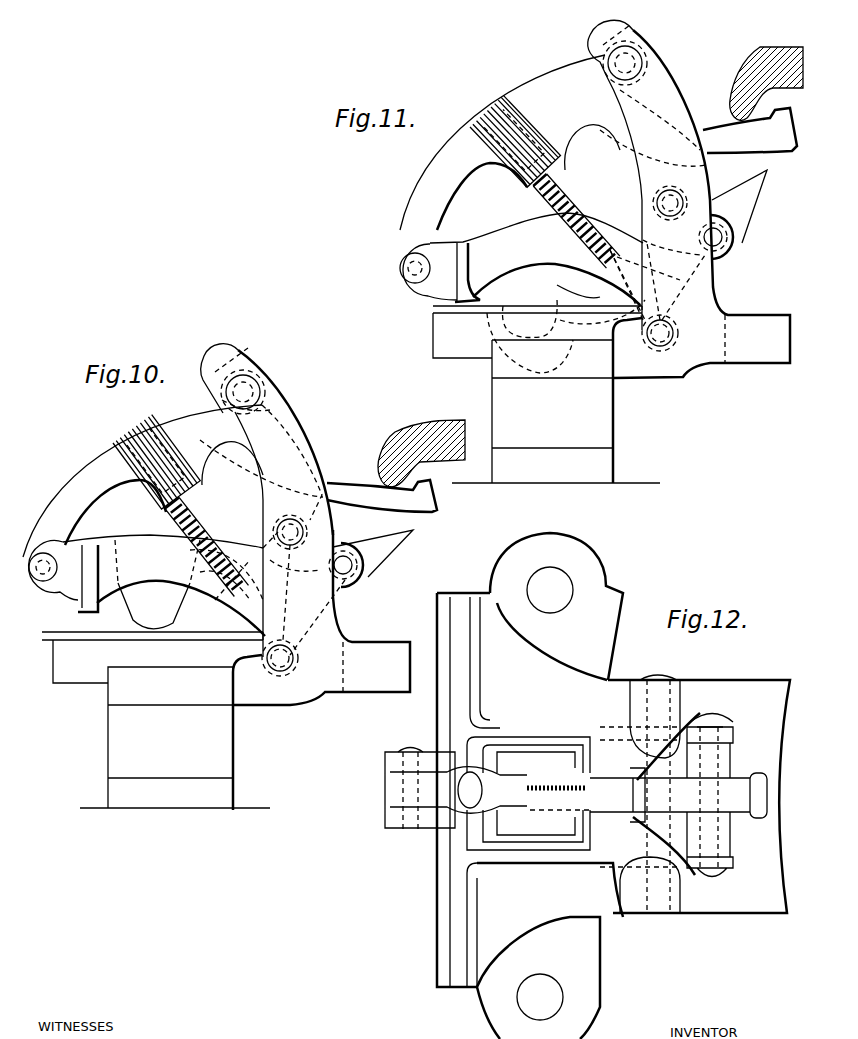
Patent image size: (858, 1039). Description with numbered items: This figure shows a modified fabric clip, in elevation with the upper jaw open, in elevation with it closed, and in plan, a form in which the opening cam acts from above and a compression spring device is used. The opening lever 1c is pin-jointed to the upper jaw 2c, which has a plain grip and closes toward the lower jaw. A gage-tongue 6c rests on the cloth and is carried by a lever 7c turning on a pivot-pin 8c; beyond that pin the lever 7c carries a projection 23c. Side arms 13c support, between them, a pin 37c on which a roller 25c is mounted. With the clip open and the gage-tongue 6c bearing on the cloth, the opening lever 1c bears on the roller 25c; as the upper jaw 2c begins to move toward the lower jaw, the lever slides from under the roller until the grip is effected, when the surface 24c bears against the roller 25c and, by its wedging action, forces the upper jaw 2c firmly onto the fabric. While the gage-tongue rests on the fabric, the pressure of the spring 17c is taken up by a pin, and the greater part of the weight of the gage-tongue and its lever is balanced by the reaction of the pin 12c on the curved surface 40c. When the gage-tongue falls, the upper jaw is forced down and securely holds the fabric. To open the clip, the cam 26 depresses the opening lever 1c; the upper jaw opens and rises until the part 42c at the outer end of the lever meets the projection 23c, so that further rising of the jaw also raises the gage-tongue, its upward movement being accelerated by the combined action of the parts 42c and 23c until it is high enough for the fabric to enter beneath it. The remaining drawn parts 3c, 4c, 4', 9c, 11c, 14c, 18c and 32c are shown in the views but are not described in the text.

In FIG. 10, the opening lever 1c is at (143, 481).
In FIG. 11, the opening lever 1c is at (510, 142).
In FIG. 12, the opening lever 1c is at (576, 790).
In FIG. 10, the upper jaw 2c is at (90, 596).
In FIG. 11, the upper jaw 2c is at (460, 283).
In FIG. 12, the upper jaw 2c is at (458, 697).
In FIG. 10, the arm 3c is at (164, 585).
In FIG. 11, the arm 3c is at (536, 259).
In FIG. 12, the arm 3c is at (520, 732).
In FIG. 10, the pivot 4c is at (53, 581).
In FIG. 11, the pivot 4c is at (400, 274).
In FIG. 12, the bolt 4' is at (410, 779).
In FIG. 10, the gage-tongue 6c is at (157, 584).
In FIG. 11, the gage-tongue 6c is at (548, 370).
In FIG. 12, the gage-tongue 6c is at (540, 750).
In FIG. 10, the lever of the gage-tongue 7c is at (222, 597).
In FIG. 11, the lever of the gage-tongue 7c is at (568, 287).
In FIG. 10, the pivot-pin 8c is at (353, 567).
In FIG. 11, the pivot-pin 8c is at (718, 238).
In FIG. 12, the pivot-pin 8c is at (715, 716).
In FIG. 10, the pivot pin 9c is at (270, 692).
In FIG. 11, the pivot pin 9c is at (660, 355).
In FIG. 12, the pivot pin 9c is at (660, 676).
In FIG. 10, the link 11c is at (326, 537).
In FIG. 11, the link 11c is at (657, 281).
In FIG. 10, the pin 12c is at (276, 534).
In FIG. 11, the pin 12c is at (655, 205).
In FIG. 10, the side arms 13c is at (300, 442).
In FIG. 11, the side arms 13c is at (649, 165).
In FIG. 12, the side arms 13c is at (640, 796).
In FIG. 10, the base block 14c is at (321, 670).
In FIG. 11, the base block 14c is at (621, 341).
In FIG. 12, the base block 14c is at (699, 796).
In FIG. 10, the spring 17c is at (213, 520).
In FIG. 11, the spring 17c is at (578, 192).
In FIG. 12, the spring 17c is at (552, 786).
In FIG. 10, the lever 18c is at (240, 627).
In FIG. 11, the lever 18c is at (610, 350).
In FIG. 10, the projection 23c is at (373, 553).
In FIG. 11, the projection 23c is at (739, 206).
In FIG. 10, the surface 24c is at (295, 432).
In FIG. 11, the surface 24c is at (613, 90).
In FIG. 12, the surface 24c is at (560, 799).
In FIG. 10, the roller 25c is at (222, 400).
In FIG. 11, the roller 25c is at (645, 44).
In FIG. 12, the roller 25c is at (626, 795).
In FIG. 10, the cam 26 is at (420, 445).
In FIG. 11, the cam 26 is at (745, 64).
In FIG. 10, the bracket 32c is at (229, 675).
In FIG. 10, the pin 37c is at (253, 387).
In FIG. 11, the pin 37c is at (607, 63).
In FIG. 10, the curved surface 40c is at (290, 585).
In FIG. 11, the curved surface 40c is at (647, 240).
In FIG. 10, the part of the outer end of the opening lever 42c is at (432, 515).
In FIG. 11, the part of the outer end of the opening lever 42c is at (752, 143).